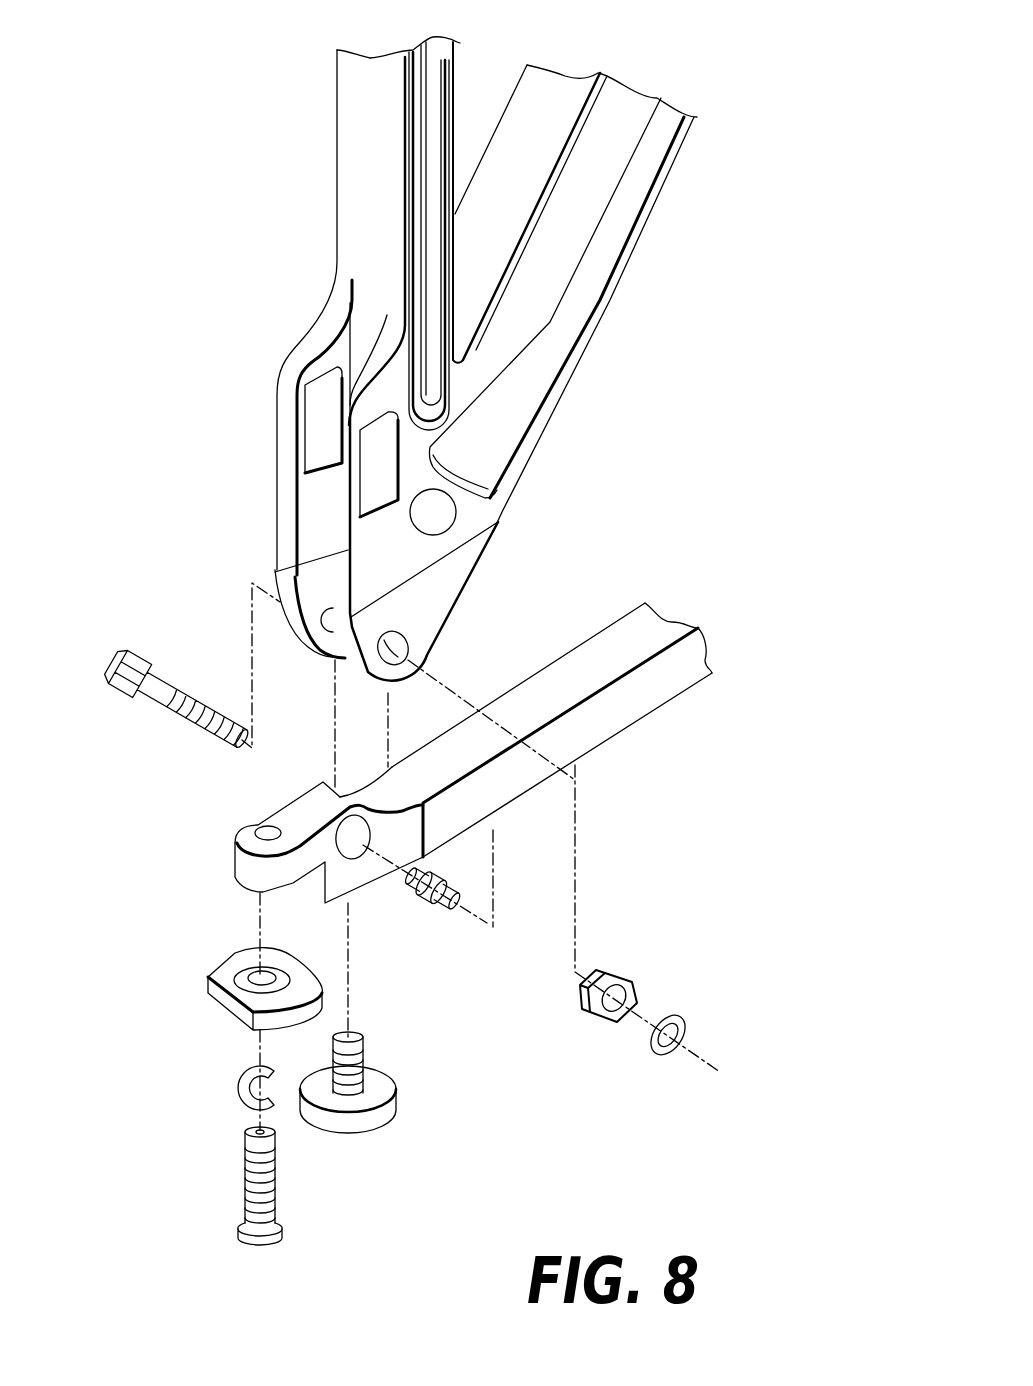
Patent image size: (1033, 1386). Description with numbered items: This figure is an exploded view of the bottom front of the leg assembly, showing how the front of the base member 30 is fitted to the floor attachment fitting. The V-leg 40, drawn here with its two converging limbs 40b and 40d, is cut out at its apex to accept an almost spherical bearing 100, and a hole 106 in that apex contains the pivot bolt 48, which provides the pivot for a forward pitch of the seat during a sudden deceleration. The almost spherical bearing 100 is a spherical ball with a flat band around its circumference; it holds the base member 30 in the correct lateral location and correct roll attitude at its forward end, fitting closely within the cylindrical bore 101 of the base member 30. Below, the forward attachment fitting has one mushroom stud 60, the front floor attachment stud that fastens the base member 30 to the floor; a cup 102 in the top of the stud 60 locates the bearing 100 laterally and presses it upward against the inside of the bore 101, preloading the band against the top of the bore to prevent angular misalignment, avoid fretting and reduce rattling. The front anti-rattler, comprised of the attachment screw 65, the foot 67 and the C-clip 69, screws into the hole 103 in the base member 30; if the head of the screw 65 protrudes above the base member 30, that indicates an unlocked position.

The V-leg 40 is at (668, 68).
The vertical arm of frame member 40b is at (335, 218).
The diagonal arm of frame member 40d is at (607, 310).
The hole 106 is at (407, 640).
The pivot bolt 48 is at (157, 693).
The base member 30 is at (597, 725).
The hole 103 is at (263, 832).
The bore 101 is at (353, 838).
The almost spherical bearing 100 is at (433, 903).
The foot 67 is at (207, 990).
The C-clip 69 is at (233, 1088).
The attachment screw 65 is at (273, 1180).
The cup 102 is at (353, 1040).
The front floor attachment stud 60 is at (387, 1113).